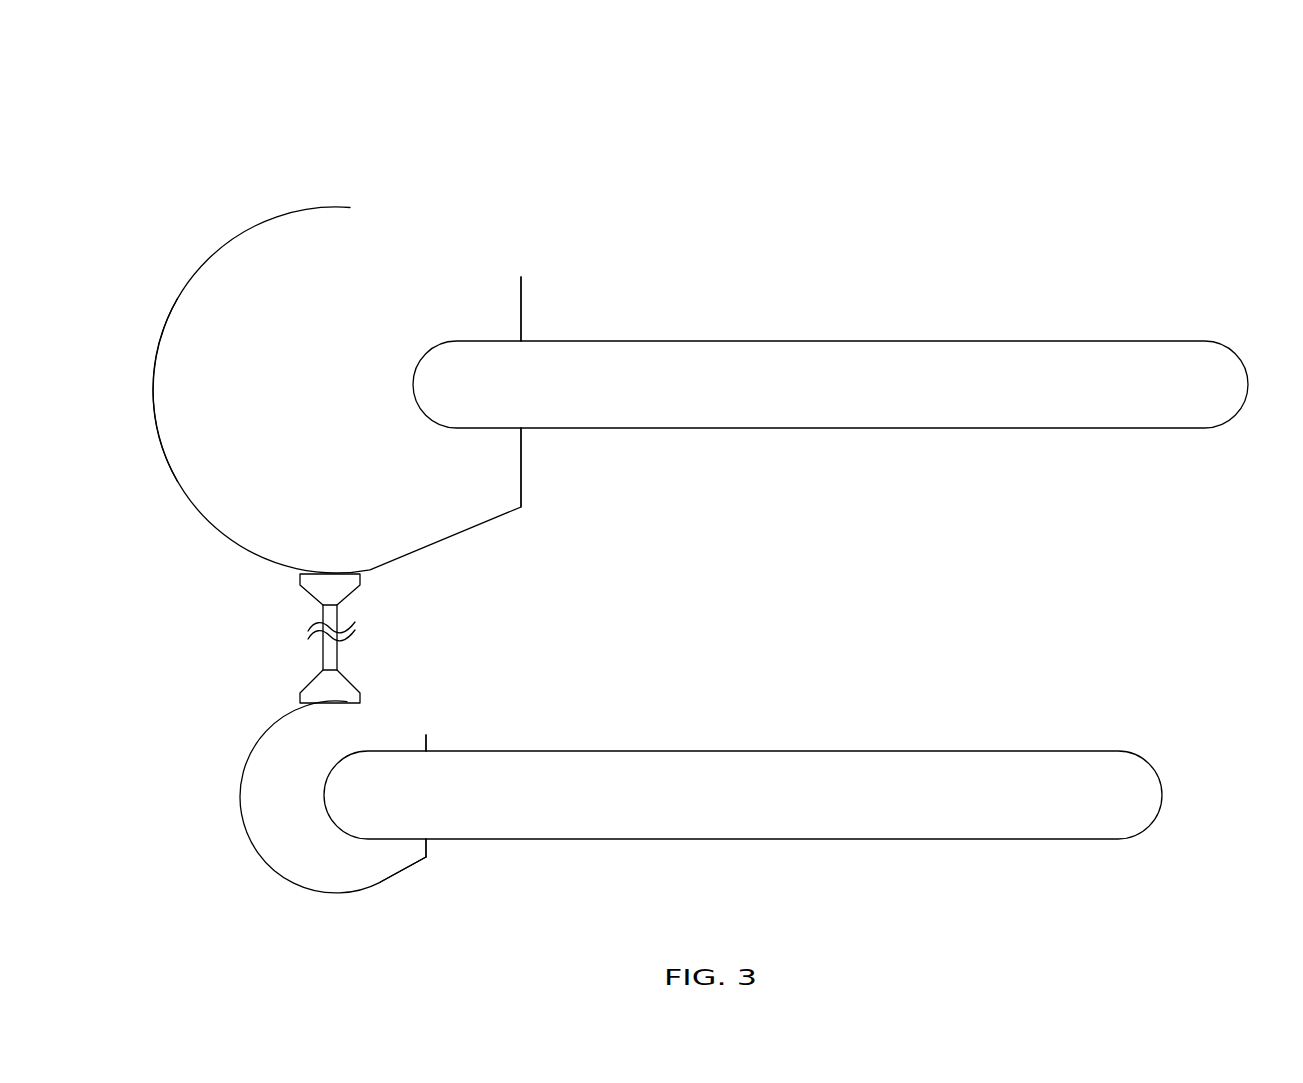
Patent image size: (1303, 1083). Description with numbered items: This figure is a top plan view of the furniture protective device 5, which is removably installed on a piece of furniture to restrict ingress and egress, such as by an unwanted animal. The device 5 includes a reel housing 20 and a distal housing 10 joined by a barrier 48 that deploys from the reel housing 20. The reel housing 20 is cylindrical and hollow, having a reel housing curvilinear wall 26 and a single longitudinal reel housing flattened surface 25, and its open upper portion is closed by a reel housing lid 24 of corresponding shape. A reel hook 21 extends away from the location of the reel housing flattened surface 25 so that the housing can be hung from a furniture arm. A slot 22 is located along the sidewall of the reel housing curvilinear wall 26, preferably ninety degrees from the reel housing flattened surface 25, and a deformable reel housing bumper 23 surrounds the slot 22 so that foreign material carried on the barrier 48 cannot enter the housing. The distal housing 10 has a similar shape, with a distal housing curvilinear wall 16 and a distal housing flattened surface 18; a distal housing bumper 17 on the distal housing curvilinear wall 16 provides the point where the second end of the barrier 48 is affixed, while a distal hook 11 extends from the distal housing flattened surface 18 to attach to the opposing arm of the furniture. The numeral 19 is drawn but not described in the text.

The furniture protective device 5 is at (1078, 230).
The distal housing 10 is at (168, 743).
The distal hook 11 is at (795, 792).
The distal housing curvilinear wall 16 is at (242, 817).
The distal housing bumper 17 is at (330, 689).
The distal housing flattened surface 18 is at (427, 745).
The first head chamfer 19 is at (355, 870).
The reel housing 20 is at (168, 230).
The reel hook 21 is at (590, 378).
The slot 22 is at (338, 603).
The reel housing bumper 23 is at (320, 590).
The reel housing lid 24 is at (274, 260).
The reel housing flattened surface 25 is at (521, 314).
The reel housing curvilinear wall 26 is at (152, 412).
The barrier 48 is at (333, 620).